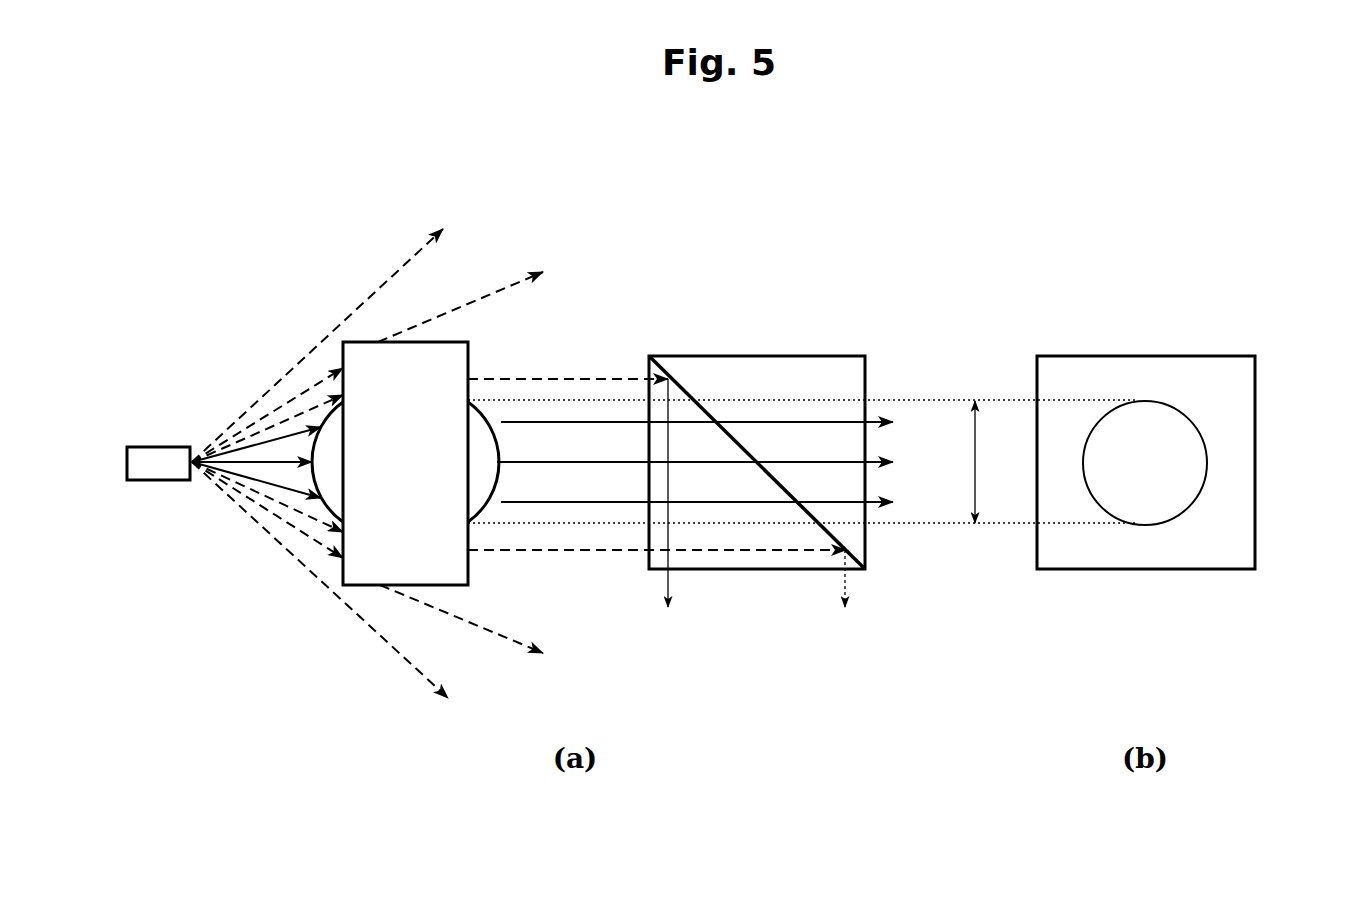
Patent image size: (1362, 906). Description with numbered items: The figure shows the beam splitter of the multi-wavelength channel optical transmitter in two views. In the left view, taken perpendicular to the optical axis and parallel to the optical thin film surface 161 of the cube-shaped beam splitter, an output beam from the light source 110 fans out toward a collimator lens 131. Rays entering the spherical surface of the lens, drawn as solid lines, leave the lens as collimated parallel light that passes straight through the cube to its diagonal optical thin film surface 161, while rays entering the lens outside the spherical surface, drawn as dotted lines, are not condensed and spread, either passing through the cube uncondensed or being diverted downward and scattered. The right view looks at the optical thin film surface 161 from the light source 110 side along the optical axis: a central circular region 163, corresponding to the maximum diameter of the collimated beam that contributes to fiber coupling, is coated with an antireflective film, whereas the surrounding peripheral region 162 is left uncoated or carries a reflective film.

The light source 110 is at (157, 447).
The collimator lens 131 is at (468, 348).
The optical thin film surface 161 is at (853, 538).
The peripheral region 162 is at (1237, 394).
The region corresponding to the maximum diameter of the collimated beam 163 is at (1207, 463).